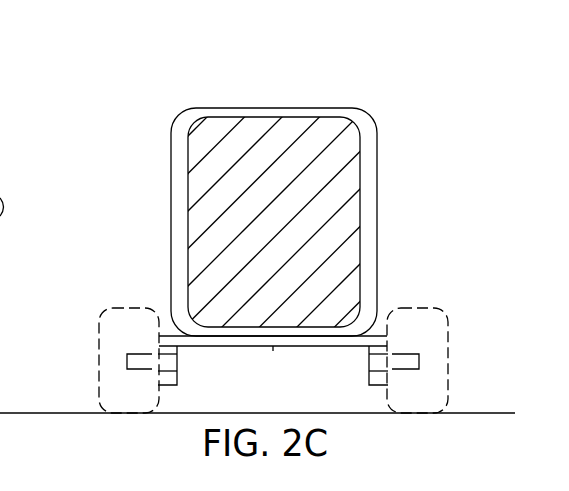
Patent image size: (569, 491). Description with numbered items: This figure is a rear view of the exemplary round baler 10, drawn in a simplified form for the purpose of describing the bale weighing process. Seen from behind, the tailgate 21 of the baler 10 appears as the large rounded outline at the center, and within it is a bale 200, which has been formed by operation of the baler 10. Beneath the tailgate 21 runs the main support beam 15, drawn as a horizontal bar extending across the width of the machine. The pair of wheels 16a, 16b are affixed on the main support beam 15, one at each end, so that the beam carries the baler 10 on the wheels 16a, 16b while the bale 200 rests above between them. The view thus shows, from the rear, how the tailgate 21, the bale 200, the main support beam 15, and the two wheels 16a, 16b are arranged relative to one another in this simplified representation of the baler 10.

The round baler 10 is at (252, 83).
The tailgate 21 is at (377, 140).
The bale 200 is at (343, 213).
The main support beam 15 is at (273, 351).
The wheel 16a is at (100, 353).
The wheel 16b is at (448, 372).